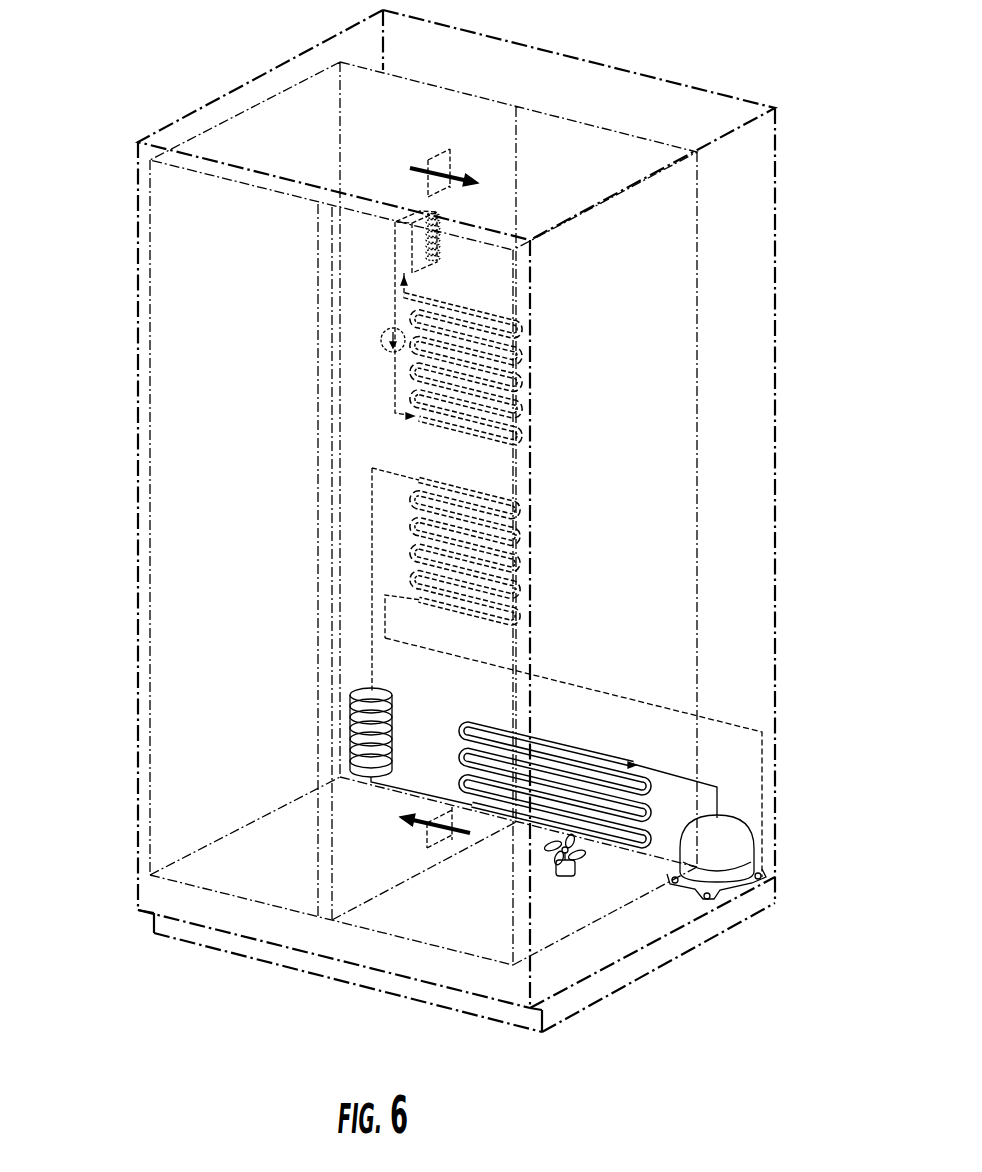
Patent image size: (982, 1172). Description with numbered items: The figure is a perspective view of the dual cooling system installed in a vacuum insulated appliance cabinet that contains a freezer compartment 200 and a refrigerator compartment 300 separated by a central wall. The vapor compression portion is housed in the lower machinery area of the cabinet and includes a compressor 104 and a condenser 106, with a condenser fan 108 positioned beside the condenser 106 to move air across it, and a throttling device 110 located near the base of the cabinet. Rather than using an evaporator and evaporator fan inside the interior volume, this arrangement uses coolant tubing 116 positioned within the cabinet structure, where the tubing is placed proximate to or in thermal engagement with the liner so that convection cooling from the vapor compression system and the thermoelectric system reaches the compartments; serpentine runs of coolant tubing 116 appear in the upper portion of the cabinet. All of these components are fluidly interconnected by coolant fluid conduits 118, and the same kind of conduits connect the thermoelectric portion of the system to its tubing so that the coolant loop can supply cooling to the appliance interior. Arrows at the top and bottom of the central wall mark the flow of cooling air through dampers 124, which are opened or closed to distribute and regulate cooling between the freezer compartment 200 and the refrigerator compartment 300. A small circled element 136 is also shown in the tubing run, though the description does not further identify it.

The compressor 104 is at (735, 845).
The condenser 106 is at (623, 843).
The condenser fan 108 is at (571, 876).
The throttling device 110 is at (350, 726).
The coolant tubing 116 is at (412, 500).
The coolant fluid conduits 118 is at (723, 722).
The dampers 124 is at (443, 168).
The flow control valve 136 is at (388, 328).
The freezer compartment 200 is at (178, 333).
The refrigerator compartment 300 is at (648, 617).